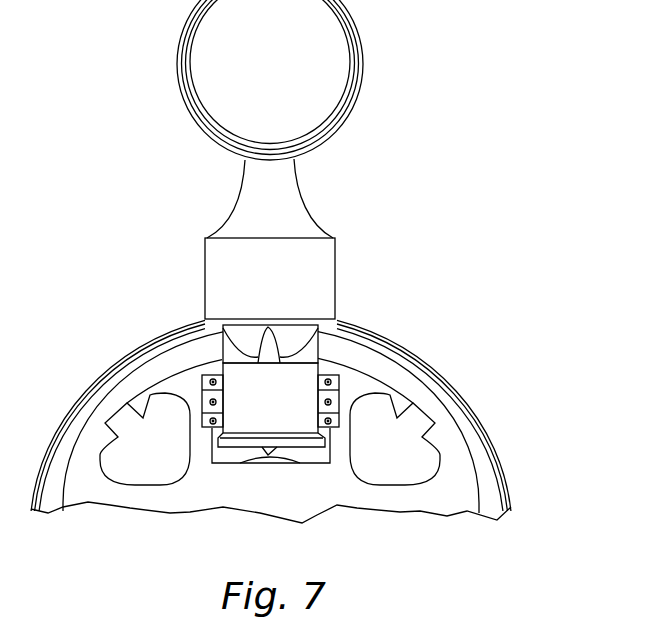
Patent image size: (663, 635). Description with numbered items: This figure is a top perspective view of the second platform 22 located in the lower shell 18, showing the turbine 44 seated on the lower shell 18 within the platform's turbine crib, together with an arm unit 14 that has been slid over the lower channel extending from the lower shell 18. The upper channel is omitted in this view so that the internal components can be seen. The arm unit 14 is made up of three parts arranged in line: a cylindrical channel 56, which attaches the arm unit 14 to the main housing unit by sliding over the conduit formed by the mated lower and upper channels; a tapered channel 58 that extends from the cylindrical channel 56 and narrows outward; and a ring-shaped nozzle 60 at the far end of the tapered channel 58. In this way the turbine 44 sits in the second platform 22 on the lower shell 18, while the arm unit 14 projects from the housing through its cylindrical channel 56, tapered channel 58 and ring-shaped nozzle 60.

The arm unit 14 is at (368, 311).
The lower shell 18 is at (418, 359).
The second platform 22 is at (452, 478).
The turbine 44 is at (228, 382).
The cylindrical channel 56 is at (205, 293).
The tapered channel 58 is at (232, 208).
The ring-shaped nozzle 60 is at (179, 51).